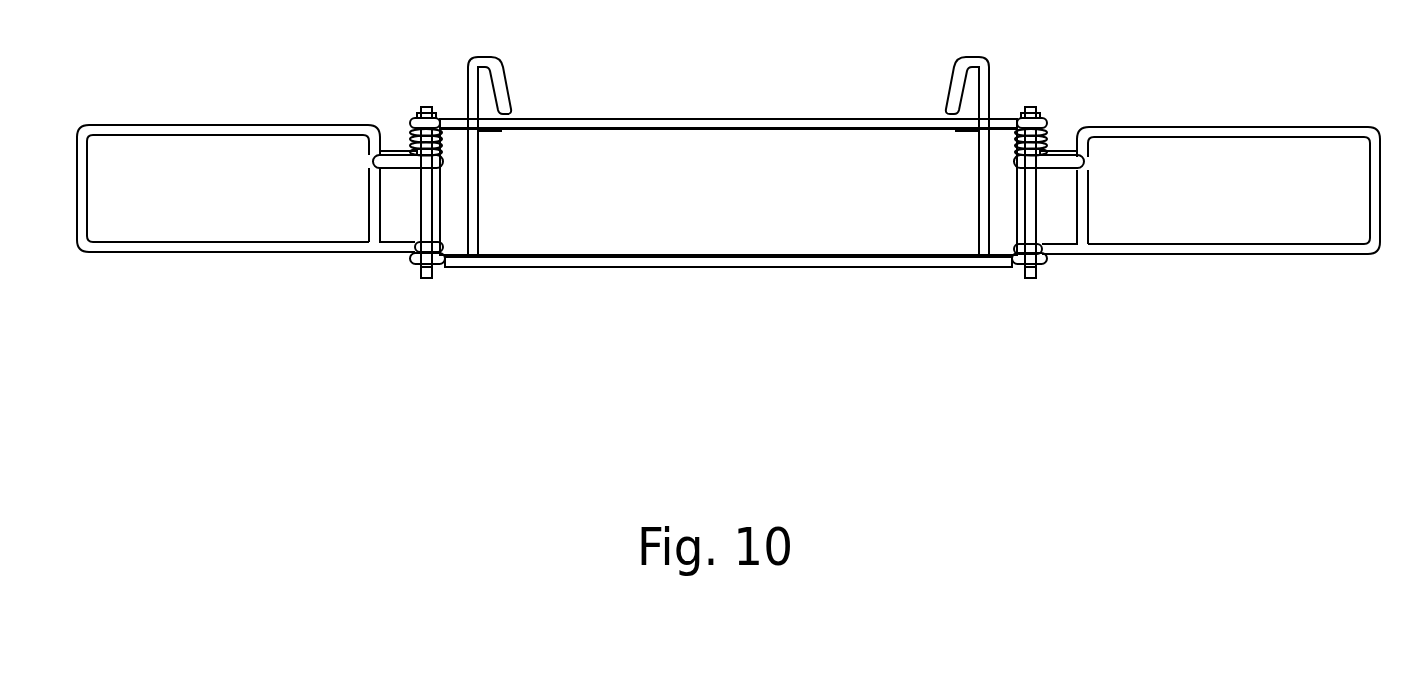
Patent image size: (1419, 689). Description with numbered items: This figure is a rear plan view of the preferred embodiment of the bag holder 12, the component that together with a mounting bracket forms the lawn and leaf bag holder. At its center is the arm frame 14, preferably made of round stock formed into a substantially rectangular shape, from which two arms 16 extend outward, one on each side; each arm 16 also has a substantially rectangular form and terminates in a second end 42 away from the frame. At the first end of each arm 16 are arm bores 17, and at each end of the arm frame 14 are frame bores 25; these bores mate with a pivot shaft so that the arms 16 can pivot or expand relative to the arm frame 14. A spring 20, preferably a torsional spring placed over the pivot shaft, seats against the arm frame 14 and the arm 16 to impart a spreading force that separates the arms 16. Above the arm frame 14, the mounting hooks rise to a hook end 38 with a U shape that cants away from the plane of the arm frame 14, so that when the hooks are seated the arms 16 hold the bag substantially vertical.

The bag holder 12 is at (1262, 62).
The arm frame 14 is at (692, 267).
The arm 16 is at (722, 220).
The second end 42 is at (72, 192).
The arm bore 17 is at (397, 153).
The spring 20 is at (1057, 150).
The frame bore 25 is at (415, 258).
The hook end 38 is at (955, 91).